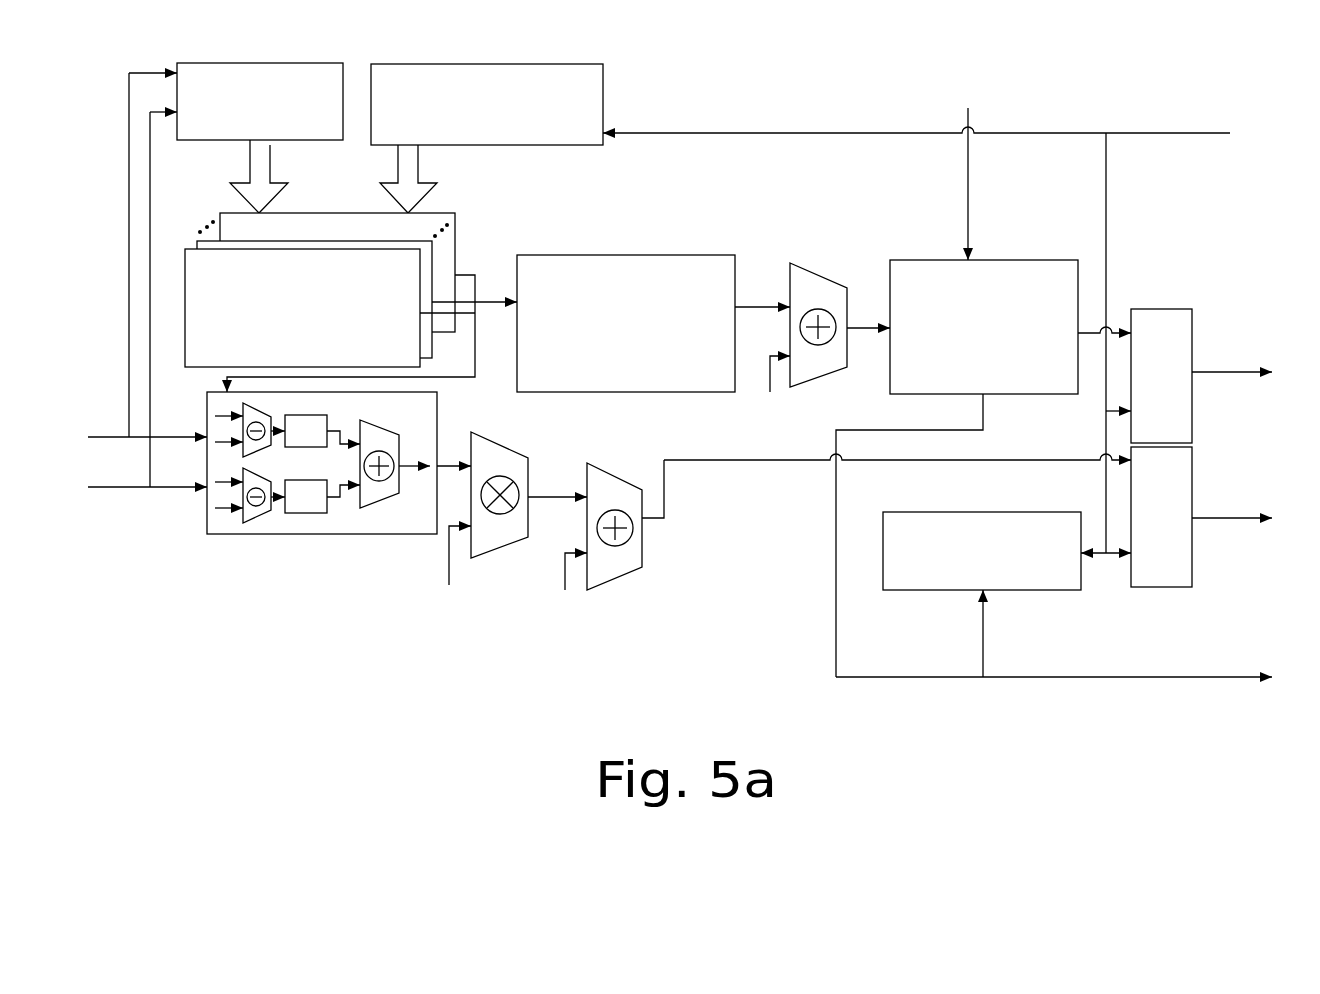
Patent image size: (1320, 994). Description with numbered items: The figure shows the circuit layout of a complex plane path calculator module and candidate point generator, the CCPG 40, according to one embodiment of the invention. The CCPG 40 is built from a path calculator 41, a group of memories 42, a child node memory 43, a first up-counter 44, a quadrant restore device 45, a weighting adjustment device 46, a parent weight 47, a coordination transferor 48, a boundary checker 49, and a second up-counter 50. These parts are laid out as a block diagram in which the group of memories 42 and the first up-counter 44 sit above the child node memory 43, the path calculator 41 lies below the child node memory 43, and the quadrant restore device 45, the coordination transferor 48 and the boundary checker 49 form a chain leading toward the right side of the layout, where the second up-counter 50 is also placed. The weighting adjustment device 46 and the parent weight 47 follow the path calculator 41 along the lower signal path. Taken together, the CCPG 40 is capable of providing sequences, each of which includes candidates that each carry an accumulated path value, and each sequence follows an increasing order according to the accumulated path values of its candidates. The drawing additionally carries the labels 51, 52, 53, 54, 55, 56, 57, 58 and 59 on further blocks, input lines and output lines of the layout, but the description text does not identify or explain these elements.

The complex plane path calculator module and candidate point generator (CCPG) 40 is at (450, 709).
The path calculator 41 is at (290, 534).
The group of memories 42 is at (240, 63).
The child node memory 43 is at (207, 302).
The first up-counter 44 is at (465, 64).
The quadrant restore device 45 is at (610, 255).
The weighting adjustment device 46 is at (493, 558).
The parent weight 47 is at (622, 580).
The coordination transferor 48 is at (808, 265).
The boundary checker 49 is at (990, 260).
The second up-counter 50 is at (985, 512).
The output register 51 is at (1160, 309).
The output register 52 is at (1157, 587).
The multiplier coefficient input 53 is at (453, 576).
The adder offset input 54 is at (569, 592).
The adder offset input 55 is at (772, 394).
The control input 56 is at (951, 184).
The output 57 is at (1072, 684).
The output 58 is at (1250, 373).
The output 59 is at (1250, 519).